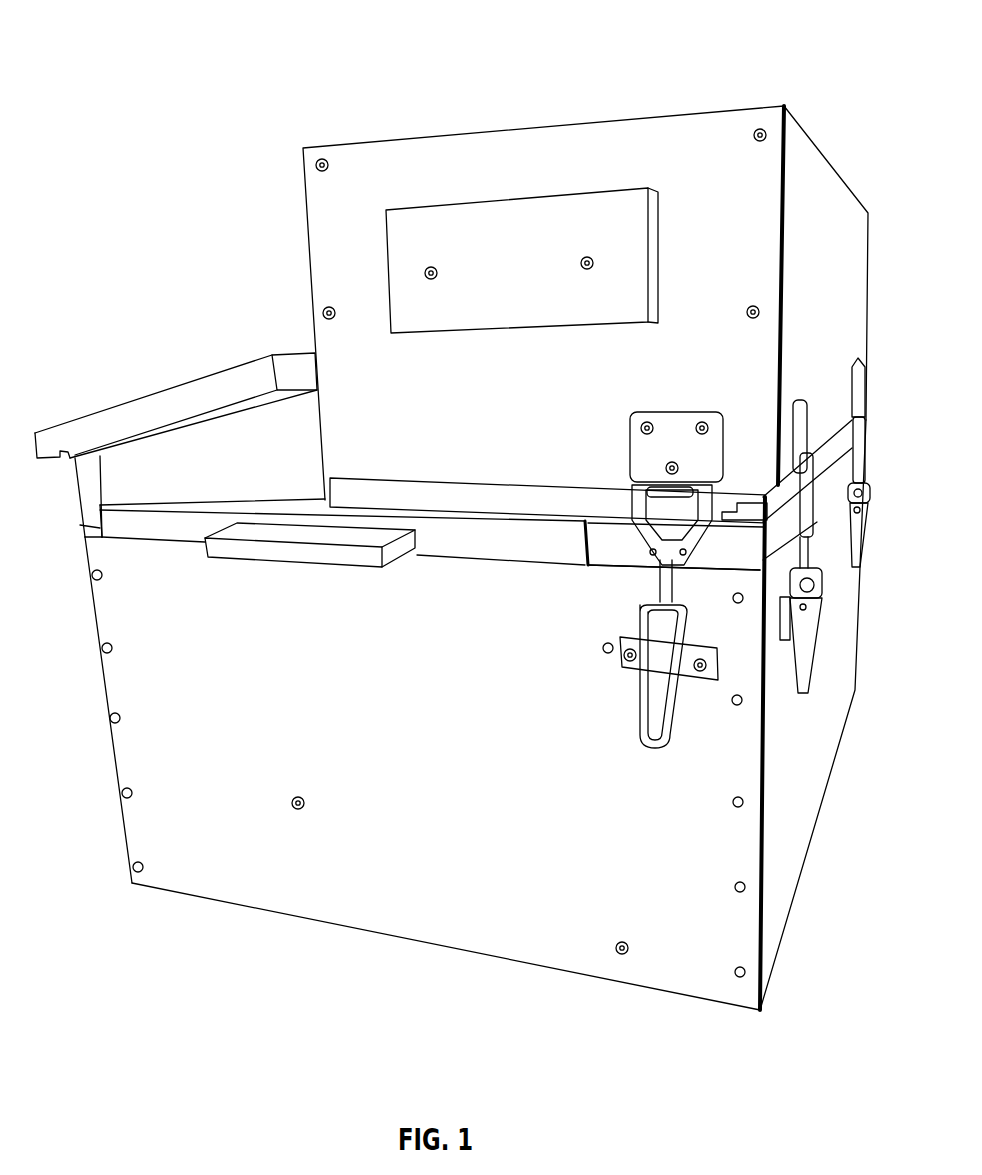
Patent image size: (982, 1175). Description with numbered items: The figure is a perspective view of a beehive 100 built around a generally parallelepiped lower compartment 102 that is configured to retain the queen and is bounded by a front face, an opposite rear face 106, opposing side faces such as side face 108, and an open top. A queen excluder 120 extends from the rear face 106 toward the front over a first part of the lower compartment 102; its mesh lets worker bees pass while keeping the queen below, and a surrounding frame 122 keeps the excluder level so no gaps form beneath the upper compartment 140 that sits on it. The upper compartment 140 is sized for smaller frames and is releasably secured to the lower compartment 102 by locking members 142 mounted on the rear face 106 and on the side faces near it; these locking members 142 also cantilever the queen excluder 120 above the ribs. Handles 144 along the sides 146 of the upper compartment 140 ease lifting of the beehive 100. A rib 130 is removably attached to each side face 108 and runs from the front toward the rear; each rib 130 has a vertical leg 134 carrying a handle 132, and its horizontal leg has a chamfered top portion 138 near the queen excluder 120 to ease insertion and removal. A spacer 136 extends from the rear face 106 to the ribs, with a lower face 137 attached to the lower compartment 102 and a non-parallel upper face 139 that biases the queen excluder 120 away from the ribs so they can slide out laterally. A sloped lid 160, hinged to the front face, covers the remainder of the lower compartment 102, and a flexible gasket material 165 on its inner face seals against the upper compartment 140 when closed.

The beehive 100 is at (130, 52).
The lower compartment 102 is at (573, 973).
The rear face 106 is at (782, 865).
The side face 108 is at (695, 993).
The queen excluder 120 is at (433, 495).
The frame 122 is at (752, 518).
The rib 130 is at (482, 540).
The handle 132 is at (292, 558).
The vertical leg 134 is at (163, 527).
The spacer 136 is at (732, 540).
The lower face 137 is at (620, 563).
The chamfered top portion 138 is at (580, 528).
The upper face 139 is at (605, 528).
The upper compartment 140 is at (820, 187).
The locking member 142 is at (672, 423).
The handle 144 is at (653, 215).
The side 146 is at (390, 163).
The lid 160 is at (50, 440).
The flexible gasket material 165 is at (303, 365).